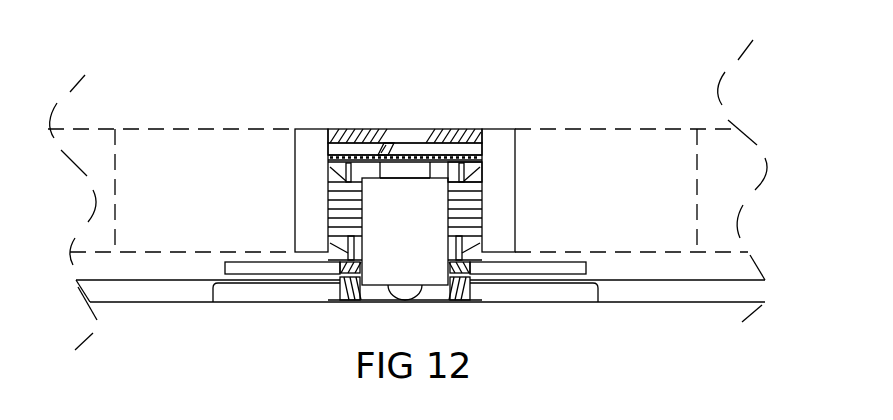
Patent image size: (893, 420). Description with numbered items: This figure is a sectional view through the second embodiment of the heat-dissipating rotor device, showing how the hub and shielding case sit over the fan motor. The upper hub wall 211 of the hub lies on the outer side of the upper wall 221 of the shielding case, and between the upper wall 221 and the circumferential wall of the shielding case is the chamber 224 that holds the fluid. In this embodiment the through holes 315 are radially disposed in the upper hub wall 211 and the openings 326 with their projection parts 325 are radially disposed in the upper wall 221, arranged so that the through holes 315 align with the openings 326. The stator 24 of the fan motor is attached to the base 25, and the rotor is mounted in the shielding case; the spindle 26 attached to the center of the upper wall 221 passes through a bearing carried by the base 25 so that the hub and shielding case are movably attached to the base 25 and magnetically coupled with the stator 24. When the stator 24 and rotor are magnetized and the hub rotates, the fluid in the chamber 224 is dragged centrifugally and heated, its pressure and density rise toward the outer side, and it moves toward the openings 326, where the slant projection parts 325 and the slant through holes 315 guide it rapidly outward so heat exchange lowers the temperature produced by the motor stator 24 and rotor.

The upper hub wall 211 is at (322, 128).
The openings 326 is at (405, 160).
The projection parts 325 is at (380, 153).
The through holes 315 is at (417, 138).
The upper wall 221 is at (452, 140).
The chamber 224 is at (462, 168).
The stator 24 is at (475, 210).
The base 25 is at (276, 290).
The spindle 26 is at (410, 295).